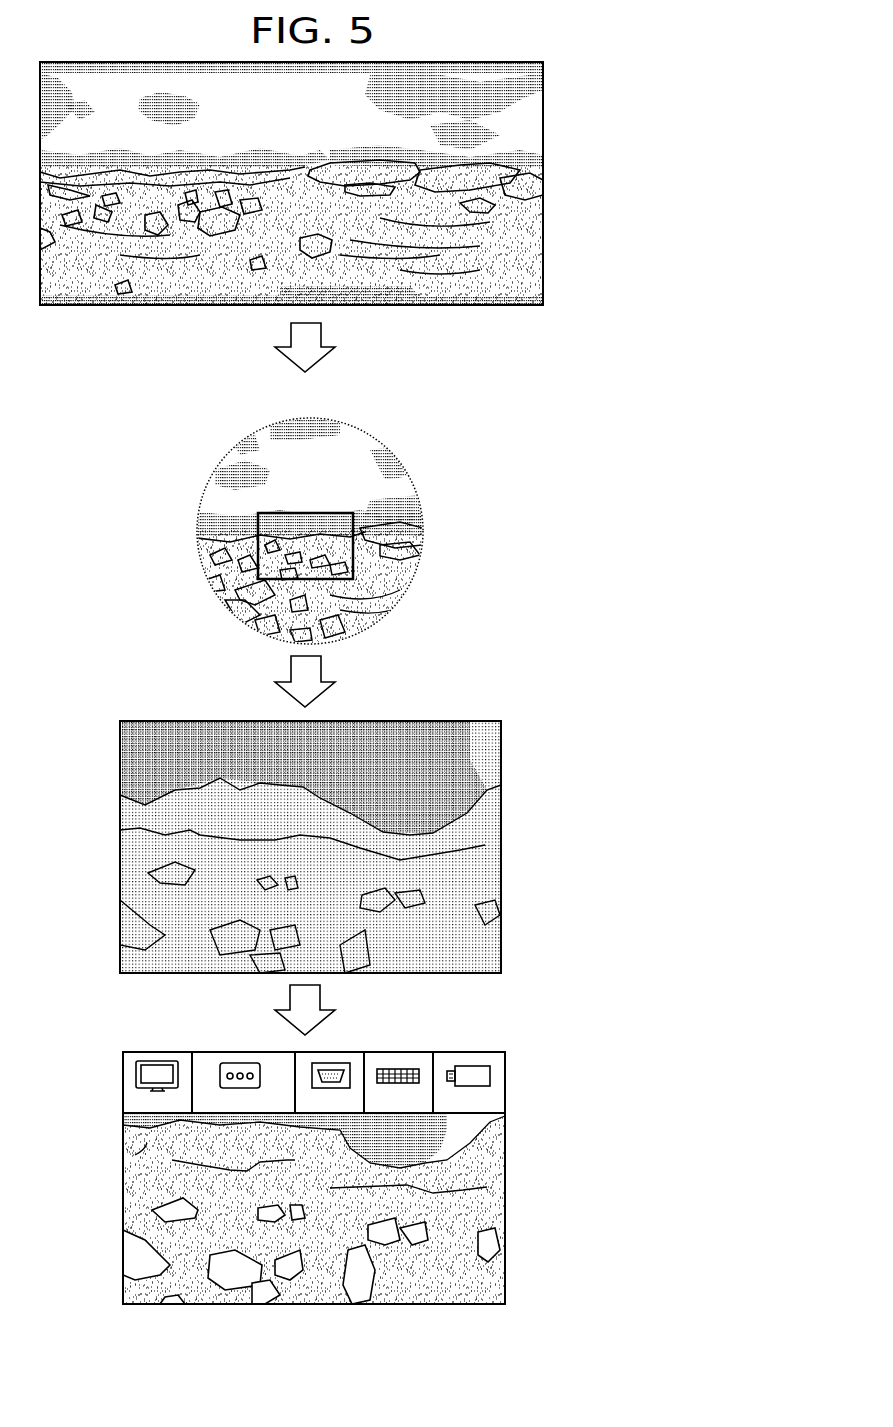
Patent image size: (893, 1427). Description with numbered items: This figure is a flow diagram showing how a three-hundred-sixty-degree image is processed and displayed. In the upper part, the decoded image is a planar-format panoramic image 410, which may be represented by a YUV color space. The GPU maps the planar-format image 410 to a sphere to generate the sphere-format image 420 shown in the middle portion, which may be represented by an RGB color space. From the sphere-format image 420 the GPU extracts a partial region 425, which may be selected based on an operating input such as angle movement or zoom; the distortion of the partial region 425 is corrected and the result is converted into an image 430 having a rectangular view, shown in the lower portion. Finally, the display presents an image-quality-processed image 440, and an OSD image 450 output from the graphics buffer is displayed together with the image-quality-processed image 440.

The planar-format 360° image 410 is at (462, 62).
The sphere-format 360° image 420 is at (342, 422).
The partial region 425 is at (308, 513).
The image having a rectangular view 430 is at (450, 721).
The image-quality-processed image 440 is at (508, 1190).
The OSD image 450 is at (507, 1083).